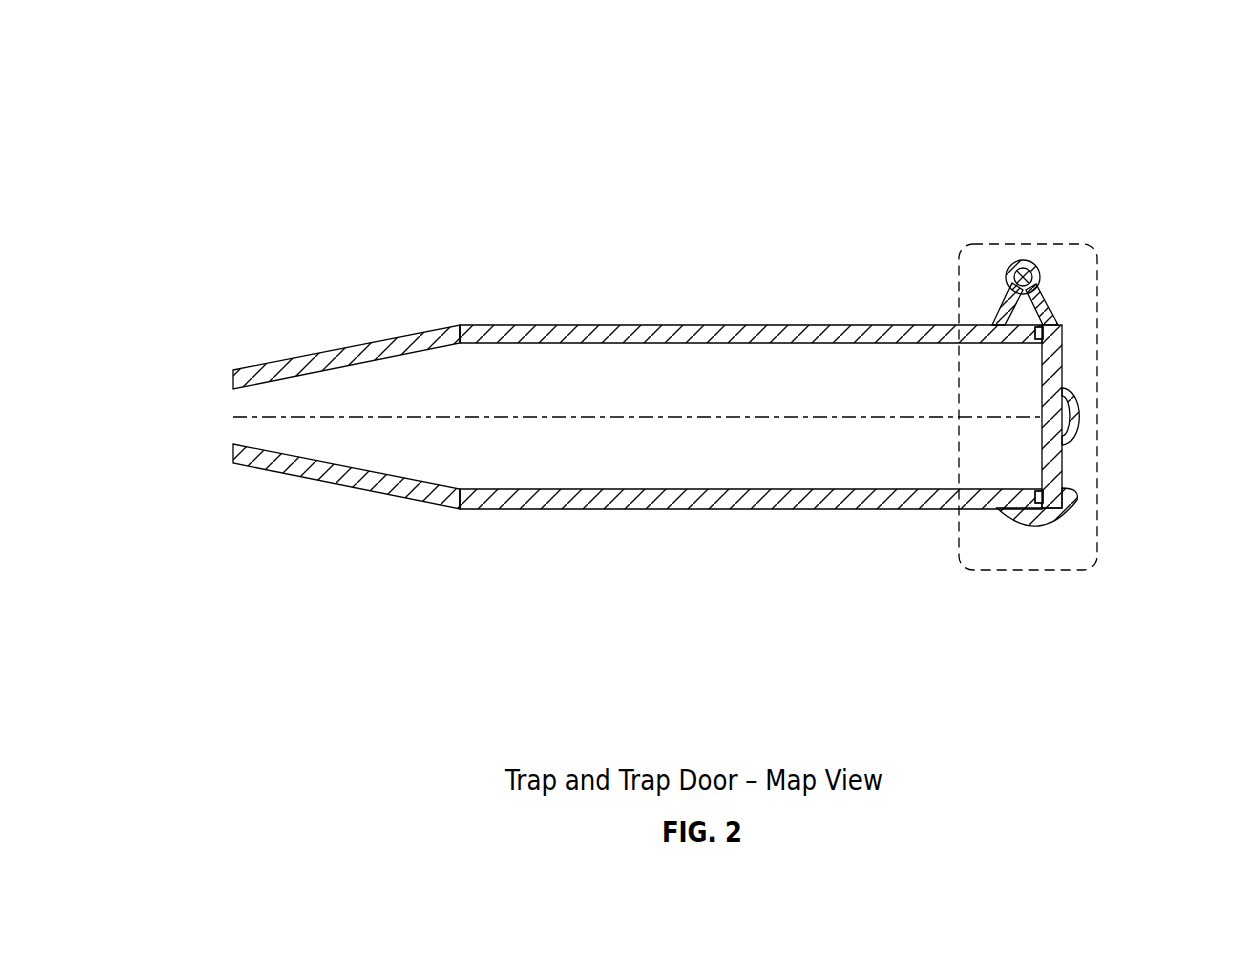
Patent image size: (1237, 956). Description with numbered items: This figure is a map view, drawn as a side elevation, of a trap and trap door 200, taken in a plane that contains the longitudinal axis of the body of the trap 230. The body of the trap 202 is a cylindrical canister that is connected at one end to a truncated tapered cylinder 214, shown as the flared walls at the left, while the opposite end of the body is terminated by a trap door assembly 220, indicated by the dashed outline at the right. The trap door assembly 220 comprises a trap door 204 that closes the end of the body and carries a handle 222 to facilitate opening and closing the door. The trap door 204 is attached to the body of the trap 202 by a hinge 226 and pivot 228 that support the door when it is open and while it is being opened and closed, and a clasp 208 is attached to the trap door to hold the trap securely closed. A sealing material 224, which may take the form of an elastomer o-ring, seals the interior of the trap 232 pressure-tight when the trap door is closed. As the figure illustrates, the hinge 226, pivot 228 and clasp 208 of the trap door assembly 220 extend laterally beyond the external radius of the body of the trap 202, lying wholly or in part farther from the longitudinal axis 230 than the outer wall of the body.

The trap and trap door 200 is at (436, 88).
The body of the trap 202 is at (722, 509).
The trap door assembly 204 is at (1064, 458).
The handle 208 is at (1043, 528).
The clasp 214 is at (346, 487).
The axis of the body of the trap 220 is at (1006, 572).
The Handle 222 is at (1080, 417).
The Sealing Material 224 is at (1052, 320).
The Hinge 226 is at (1054, 298).
The Pivot 228 is at (1006, 278).
The Longitudinal Axis of the Body of the Trap 230 is at (334, 416).
The Interior of Trap 232 is at (857, 466).